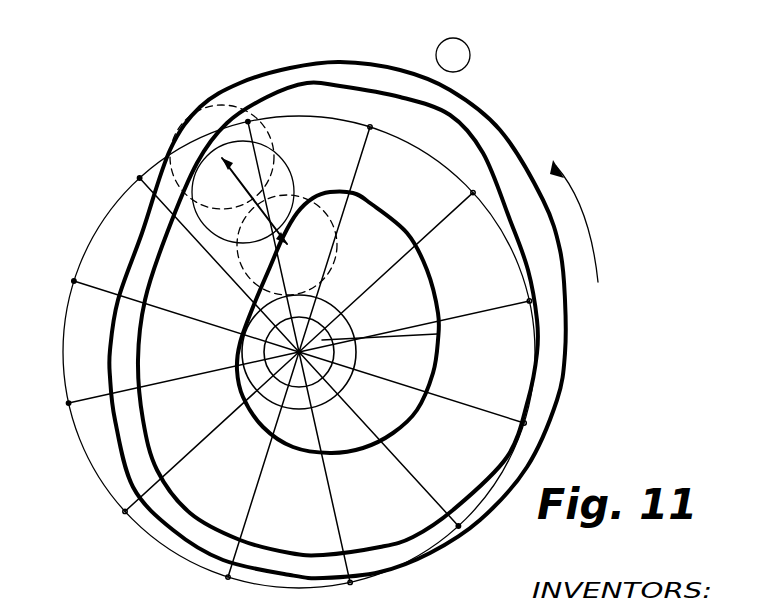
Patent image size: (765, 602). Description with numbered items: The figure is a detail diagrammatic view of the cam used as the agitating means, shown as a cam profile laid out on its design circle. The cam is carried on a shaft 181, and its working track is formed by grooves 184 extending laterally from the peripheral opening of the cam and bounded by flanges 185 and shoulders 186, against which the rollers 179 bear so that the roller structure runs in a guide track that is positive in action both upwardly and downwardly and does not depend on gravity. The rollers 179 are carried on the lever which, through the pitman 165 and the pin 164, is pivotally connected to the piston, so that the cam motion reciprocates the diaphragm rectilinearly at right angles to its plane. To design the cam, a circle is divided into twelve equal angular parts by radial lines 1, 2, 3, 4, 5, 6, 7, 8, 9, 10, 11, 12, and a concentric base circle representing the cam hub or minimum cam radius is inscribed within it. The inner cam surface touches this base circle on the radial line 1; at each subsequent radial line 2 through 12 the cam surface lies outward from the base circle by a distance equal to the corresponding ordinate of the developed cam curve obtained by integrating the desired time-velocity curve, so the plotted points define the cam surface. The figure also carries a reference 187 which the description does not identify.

The pin 164 is at (470, 53).
The pitman 165 is at (333, 117).
The rollers 179 is at (195, 112).
The shaft 181 is at (437, 281).
The grooves 184 is at (442, 143).
The flanges 185 is at (551, 353).
The shoulders 186 is at (438, 345).
The roller displacement 187 is at (224, 160).
The radial line 1 is at (72, 281).
The radial line 2 is at (138, 177).
The radial line 3 is at (269, 222).
The radial line 4 is at (341, 227).
The radial line 5 is at (474, 192).
The radial line 6 is at (426, 319).
The radial line 7 is at (421, 393).
The radial line 8 is at (459, 527).
The radial line 9 is at (327, 477).
The radial line 10 is at (228, 578).
The radial line 11 is at (124, 512).
The radial line 12 is at (67, 403).